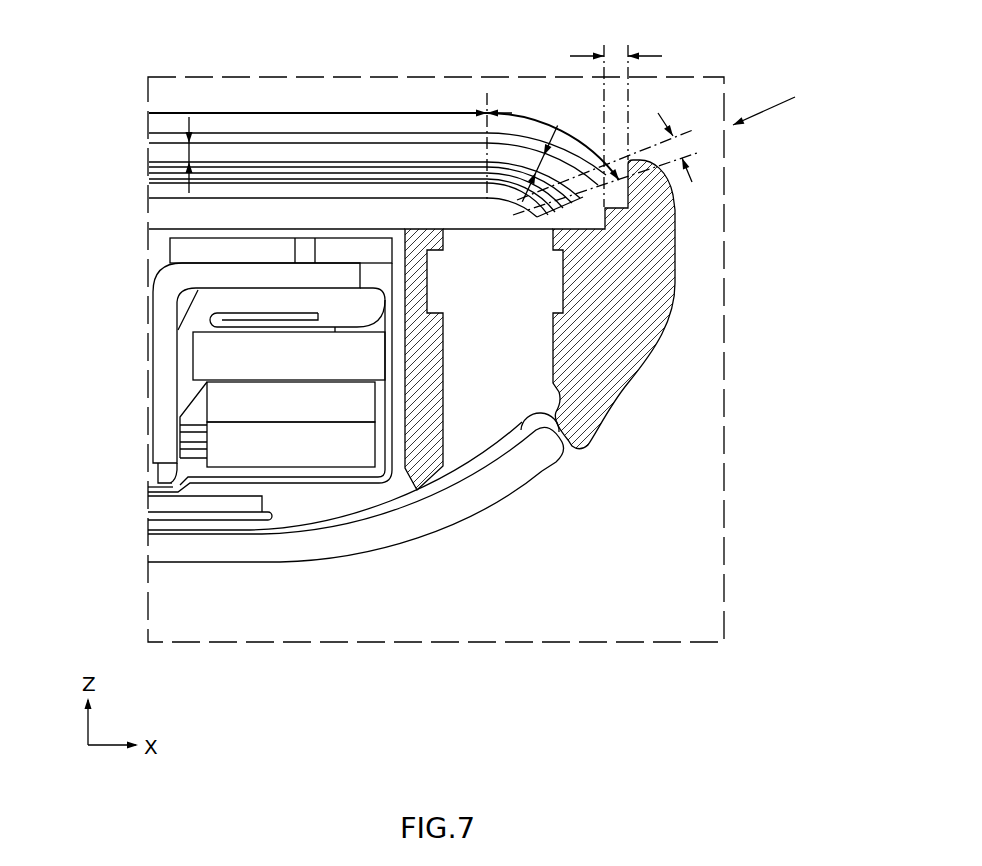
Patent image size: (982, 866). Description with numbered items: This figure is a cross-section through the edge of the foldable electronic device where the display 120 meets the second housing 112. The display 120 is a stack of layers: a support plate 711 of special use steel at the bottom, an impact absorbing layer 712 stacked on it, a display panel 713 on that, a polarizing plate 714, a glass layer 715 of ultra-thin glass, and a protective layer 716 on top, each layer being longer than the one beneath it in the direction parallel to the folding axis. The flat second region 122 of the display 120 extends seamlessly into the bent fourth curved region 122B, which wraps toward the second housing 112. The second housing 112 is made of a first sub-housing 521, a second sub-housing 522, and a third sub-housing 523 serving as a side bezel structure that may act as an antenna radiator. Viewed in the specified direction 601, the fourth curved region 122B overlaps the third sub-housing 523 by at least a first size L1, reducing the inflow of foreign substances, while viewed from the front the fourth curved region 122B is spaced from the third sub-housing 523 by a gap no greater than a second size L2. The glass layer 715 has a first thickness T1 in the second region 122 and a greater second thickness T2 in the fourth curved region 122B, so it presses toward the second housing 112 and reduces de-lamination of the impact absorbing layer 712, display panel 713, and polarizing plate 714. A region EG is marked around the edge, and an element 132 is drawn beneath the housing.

The display 120 is at (72, 115).
The second region 122 is at (308, 112).
The fourth curved region 122B is at (530, 112).
The protective layer 716 is at (153, 138).
The glass layer 715 is at (153, 153).
The polarizing plate 714 is at (153, 164).
The display panel 713 is at (151, 177).
The impact absorbing layer 712 is at (151, 185).
The support plate 711 is at (152, 193).
The first thickness T1 is at (190, 153).
The second thickness T2 is at (548, 152).
The first size L1 is at (611, 164).
The second size L2 is at (616, 113).
The edge region EG is at (389, 77).
The specified direction 601 is at (777, 104).
The second housing 112 is at (540, 375).
The first sub-housing 521 is at (429, 442).
The second sub-housing 522 is at (495, 383).
The third sub-housing 523 is at (603, 348).
The rear cover 132 is at (432, 510).